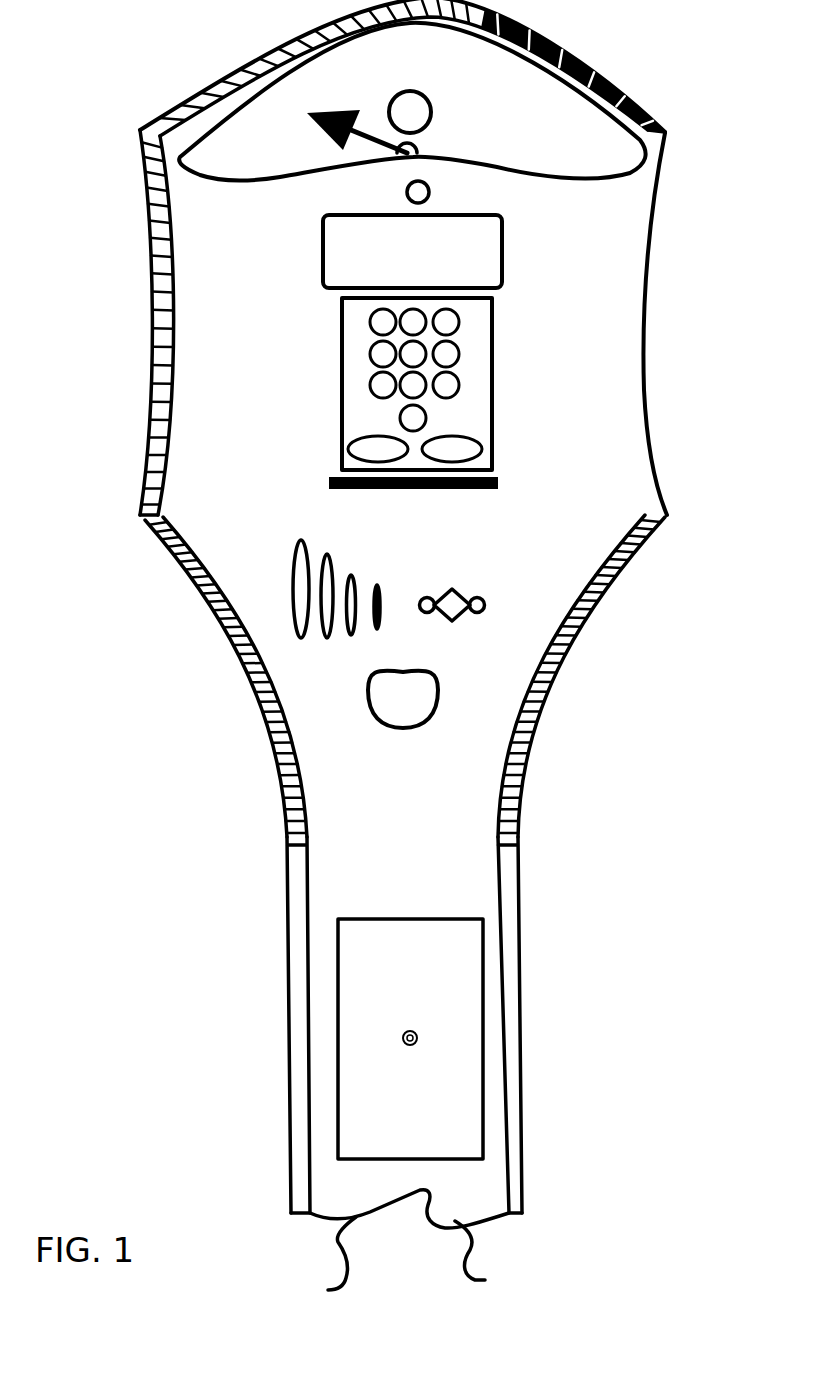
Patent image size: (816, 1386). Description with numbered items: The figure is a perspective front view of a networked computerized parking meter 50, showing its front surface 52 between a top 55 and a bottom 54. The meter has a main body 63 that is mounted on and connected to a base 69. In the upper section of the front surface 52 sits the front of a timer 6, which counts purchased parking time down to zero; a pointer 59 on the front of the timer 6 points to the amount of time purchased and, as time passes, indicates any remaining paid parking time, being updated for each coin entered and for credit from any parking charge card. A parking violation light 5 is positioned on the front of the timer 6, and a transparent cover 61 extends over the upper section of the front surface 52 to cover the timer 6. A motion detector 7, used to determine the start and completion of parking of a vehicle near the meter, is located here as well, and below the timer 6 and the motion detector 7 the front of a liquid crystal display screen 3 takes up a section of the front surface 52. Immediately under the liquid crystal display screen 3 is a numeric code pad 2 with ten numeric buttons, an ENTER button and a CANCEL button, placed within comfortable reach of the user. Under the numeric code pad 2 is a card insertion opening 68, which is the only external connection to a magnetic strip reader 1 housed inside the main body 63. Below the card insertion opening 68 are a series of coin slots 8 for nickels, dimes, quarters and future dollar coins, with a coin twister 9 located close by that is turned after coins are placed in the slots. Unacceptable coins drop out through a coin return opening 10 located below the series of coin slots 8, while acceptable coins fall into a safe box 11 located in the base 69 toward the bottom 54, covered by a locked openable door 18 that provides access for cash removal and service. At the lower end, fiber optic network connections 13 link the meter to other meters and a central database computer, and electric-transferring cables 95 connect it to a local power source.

The magnetic strip reader 1 is at (498, 483).
The numeric code pad 2 is at (493, 378).
The liquid crystal display screen 3 is at (502, 248).
The parking violation light 5 is at (391, 104).
The timer 6 is at (180, 158).
The motion detector 7 is at (405, 190).
The series of coin slots 8 is at (293, 597).
The coin twister 9 is at (482, 607).
The coin return opening 10 is at (440, 690).
The safe box 11 is at (485, 1001).
The fiber optic network connections 13 is at (475, 1241).
The locked openable door 18 is at (402, 1042).
The networked computerized parking meter 50 is at (645, 327).
The front surface 52 is at (568, 295).
The bottom 54 is at (311, 1217).
The top 55 is at (463, 5).
The pointer 59 is at (303, 115).
The transparent cover 61 is at (575, 97).
The main body 63 is at (267, 733).
The card insertion opening 68 is at (498, 490).
The base 69 is at (291, 1100).
The electric-transferring cables 95 is at (344, 1264).